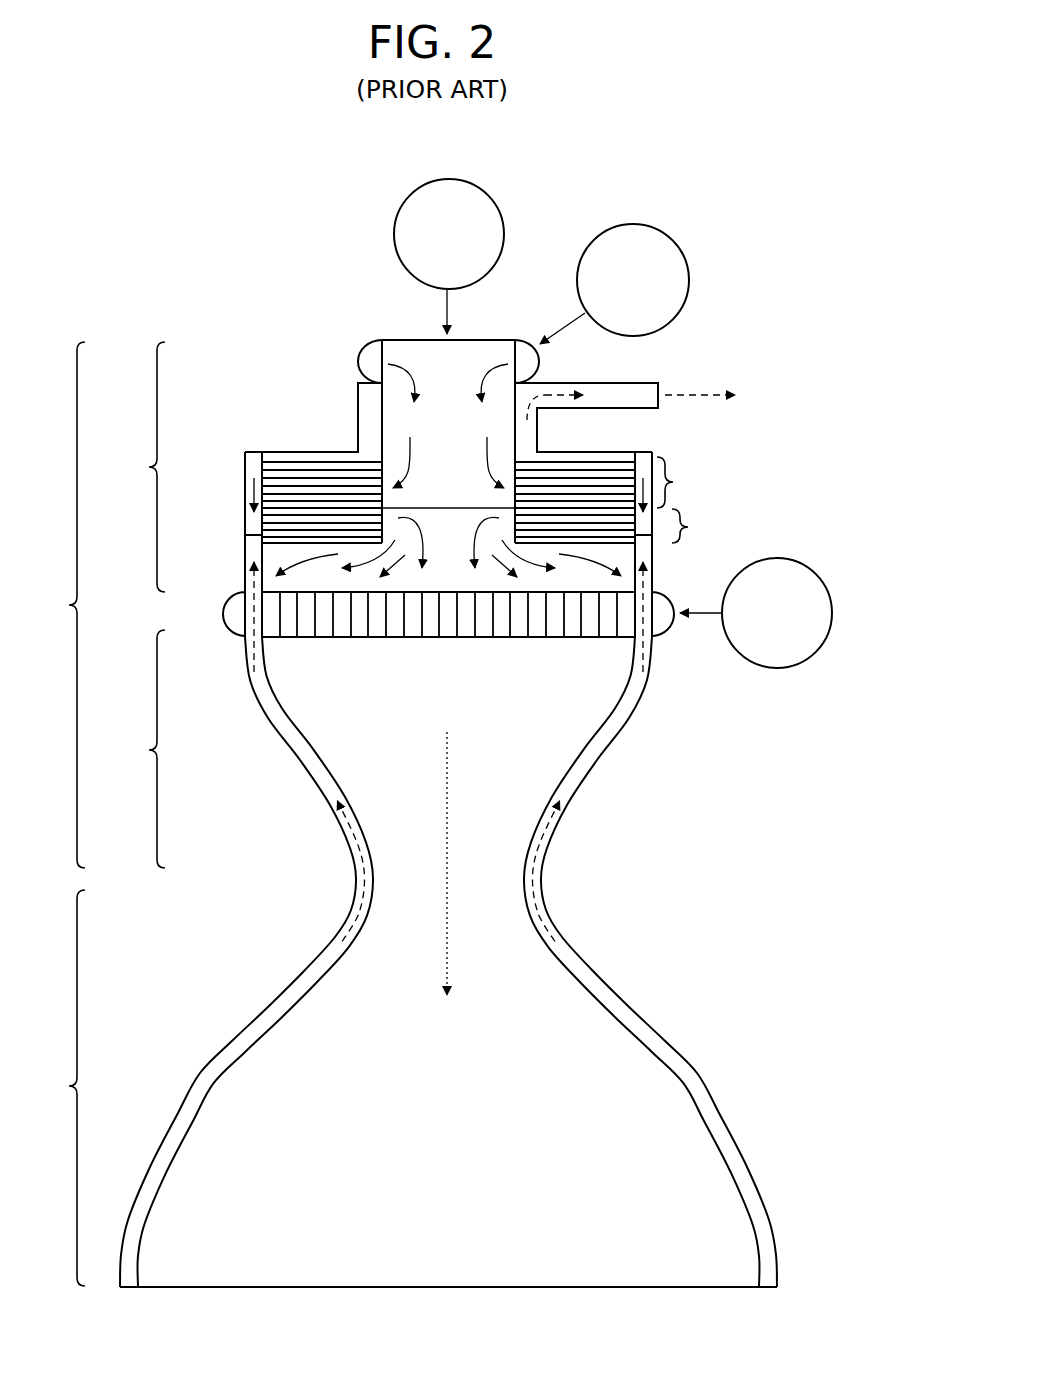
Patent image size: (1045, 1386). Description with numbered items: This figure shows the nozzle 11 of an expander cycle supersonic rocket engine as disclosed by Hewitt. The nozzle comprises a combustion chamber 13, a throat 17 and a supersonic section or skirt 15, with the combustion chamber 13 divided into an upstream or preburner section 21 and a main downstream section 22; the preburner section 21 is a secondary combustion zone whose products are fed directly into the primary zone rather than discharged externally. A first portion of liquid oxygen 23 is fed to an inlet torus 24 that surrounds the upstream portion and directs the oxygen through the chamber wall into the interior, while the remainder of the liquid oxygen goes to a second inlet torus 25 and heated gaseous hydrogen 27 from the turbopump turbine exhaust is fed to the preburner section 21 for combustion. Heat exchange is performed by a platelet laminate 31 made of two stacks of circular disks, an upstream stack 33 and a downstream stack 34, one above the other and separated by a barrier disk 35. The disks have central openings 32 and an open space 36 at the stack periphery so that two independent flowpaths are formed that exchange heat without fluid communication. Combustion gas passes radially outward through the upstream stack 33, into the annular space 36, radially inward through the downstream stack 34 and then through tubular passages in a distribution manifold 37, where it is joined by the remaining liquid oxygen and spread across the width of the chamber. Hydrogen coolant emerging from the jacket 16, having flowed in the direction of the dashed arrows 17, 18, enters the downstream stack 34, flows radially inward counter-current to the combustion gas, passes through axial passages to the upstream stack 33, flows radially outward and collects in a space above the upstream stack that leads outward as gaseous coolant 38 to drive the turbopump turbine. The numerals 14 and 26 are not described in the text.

The nozzle 11 is at (742, 268).
The combustion chamber 13 is at (60, 605).
The throat 14 is at (332, 878).
The supersonic section or skirt 15 is at (60, 1088).
The jacket 16 is at (688, 1085).
The throat 17 is at (347, 824).
The dashed arrow 18 is at (532, 855).
The upstream or preburner section 21 is at (140, 467).
The main downstream section 22 is at (140, 749).
The first portion of liquid oxygen 23 is at (645, 224).
The inlet torus 24 is at (365, 345).
The inlet torus 25 is at (230, 595).
The liquid oxygen supply to injector 26 is at (776, 668).
The heated gaseous hydrogen 27 is at (393, 232).
The platelet laminate 31 is at (560, 488).
The central openings 32 is at (450, 472).
The upstream stack 33 is at (692, 482).
The downstream stack 34 is at (707, 526).
The barrier disk 35 is at (427, 507).
The open space 36 is at (248, 458).
The distribution manifold 37 is at (527, 637).
The coolant led outward 38 is at (545, 393).